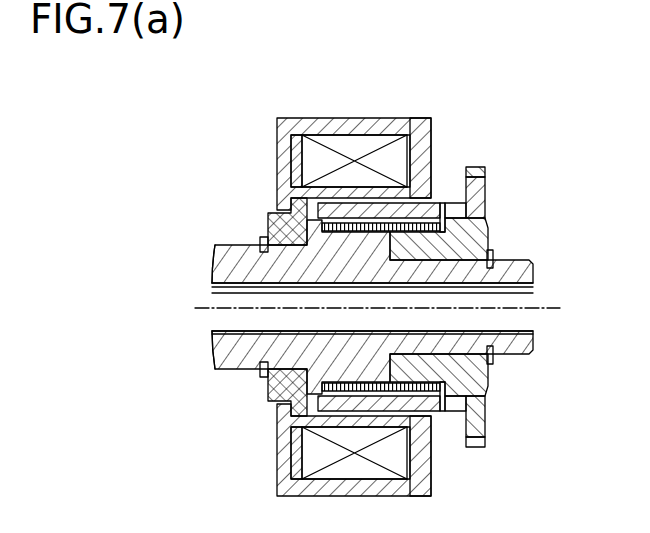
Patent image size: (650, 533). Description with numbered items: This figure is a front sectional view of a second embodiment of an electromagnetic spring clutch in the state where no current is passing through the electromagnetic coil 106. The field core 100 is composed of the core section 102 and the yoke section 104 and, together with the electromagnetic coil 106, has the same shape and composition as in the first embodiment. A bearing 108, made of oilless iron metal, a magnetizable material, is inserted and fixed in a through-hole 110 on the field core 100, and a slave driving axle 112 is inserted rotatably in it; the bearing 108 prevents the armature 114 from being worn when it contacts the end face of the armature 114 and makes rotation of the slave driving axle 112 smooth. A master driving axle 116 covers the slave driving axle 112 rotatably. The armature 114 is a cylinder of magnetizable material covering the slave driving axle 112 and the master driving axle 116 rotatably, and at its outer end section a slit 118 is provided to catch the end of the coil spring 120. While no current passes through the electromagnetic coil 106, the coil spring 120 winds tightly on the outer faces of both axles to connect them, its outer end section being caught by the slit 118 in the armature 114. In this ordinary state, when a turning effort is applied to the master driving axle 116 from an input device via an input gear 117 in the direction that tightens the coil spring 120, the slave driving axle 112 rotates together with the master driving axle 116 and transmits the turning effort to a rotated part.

The field core 100 is at (345, 95).
The core section 102 is at (277, 135).
The yoke section 104 is at (431, 138).
The electromagnetic coil 106 is at (320, 165).
The bearing 108 is at (300, 255).
The through-hole 110 is at (268, 214).
The slave driving axle 112 is at (215, 263).
The armature 114 is at (435, 203).
The master driving axle 116 is at (488, 238).
The input gear 117 is at (482, 167).
The slit 118 is at (457, 210).
The coil spring 120 is at (272, 283).